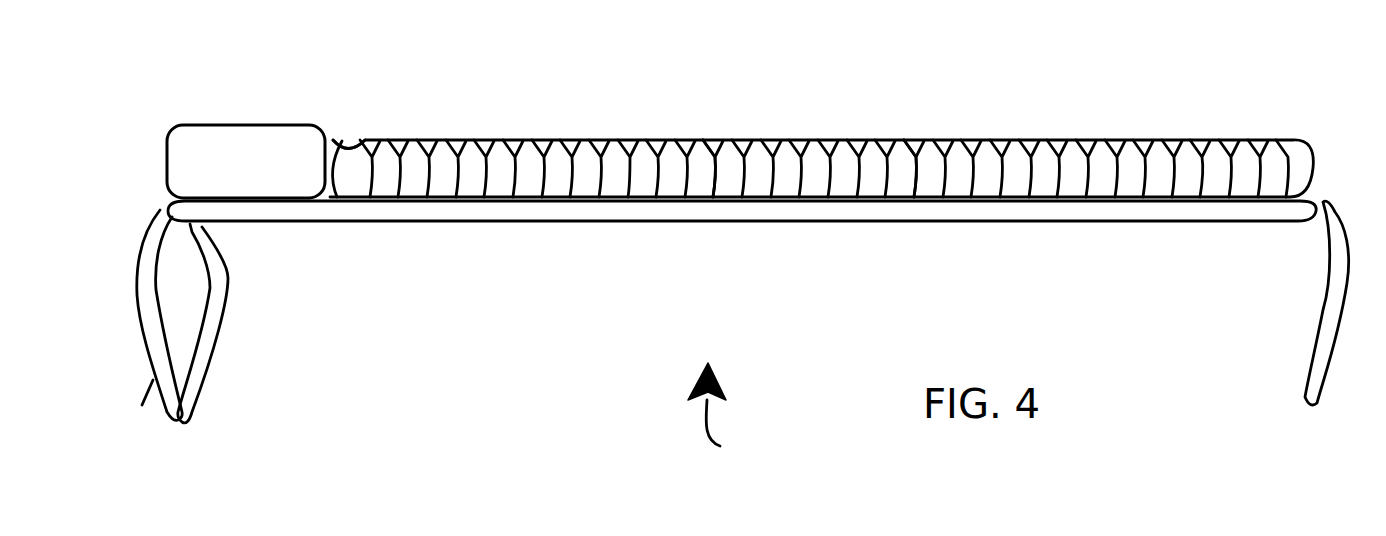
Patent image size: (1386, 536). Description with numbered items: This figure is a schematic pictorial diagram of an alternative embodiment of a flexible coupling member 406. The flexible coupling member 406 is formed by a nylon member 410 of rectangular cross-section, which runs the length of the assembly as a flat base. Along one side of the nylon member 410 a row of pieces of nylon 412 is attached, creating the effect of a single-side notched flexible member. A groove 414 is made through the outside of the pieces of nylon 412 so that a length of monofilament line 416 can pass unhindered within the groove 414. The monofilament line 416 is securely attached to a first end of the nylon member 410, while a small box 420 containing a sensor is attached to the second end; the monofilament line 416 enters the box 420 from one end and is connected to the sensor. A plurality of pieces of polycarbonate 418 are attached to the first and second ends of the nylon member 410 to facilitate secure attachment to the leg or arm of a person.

The flexible coupling member 406 is at (733, 411).
The nylon member 410 is at (698, 224).
The pieces of nylon 412 is at (903, 140).
The groove 414 is at (362, 150).
The monofilament line 416 is at (590, 139).
The pieces of polycarbonate 418 is at (177, 422).
The small box 420 is at (237, 124).